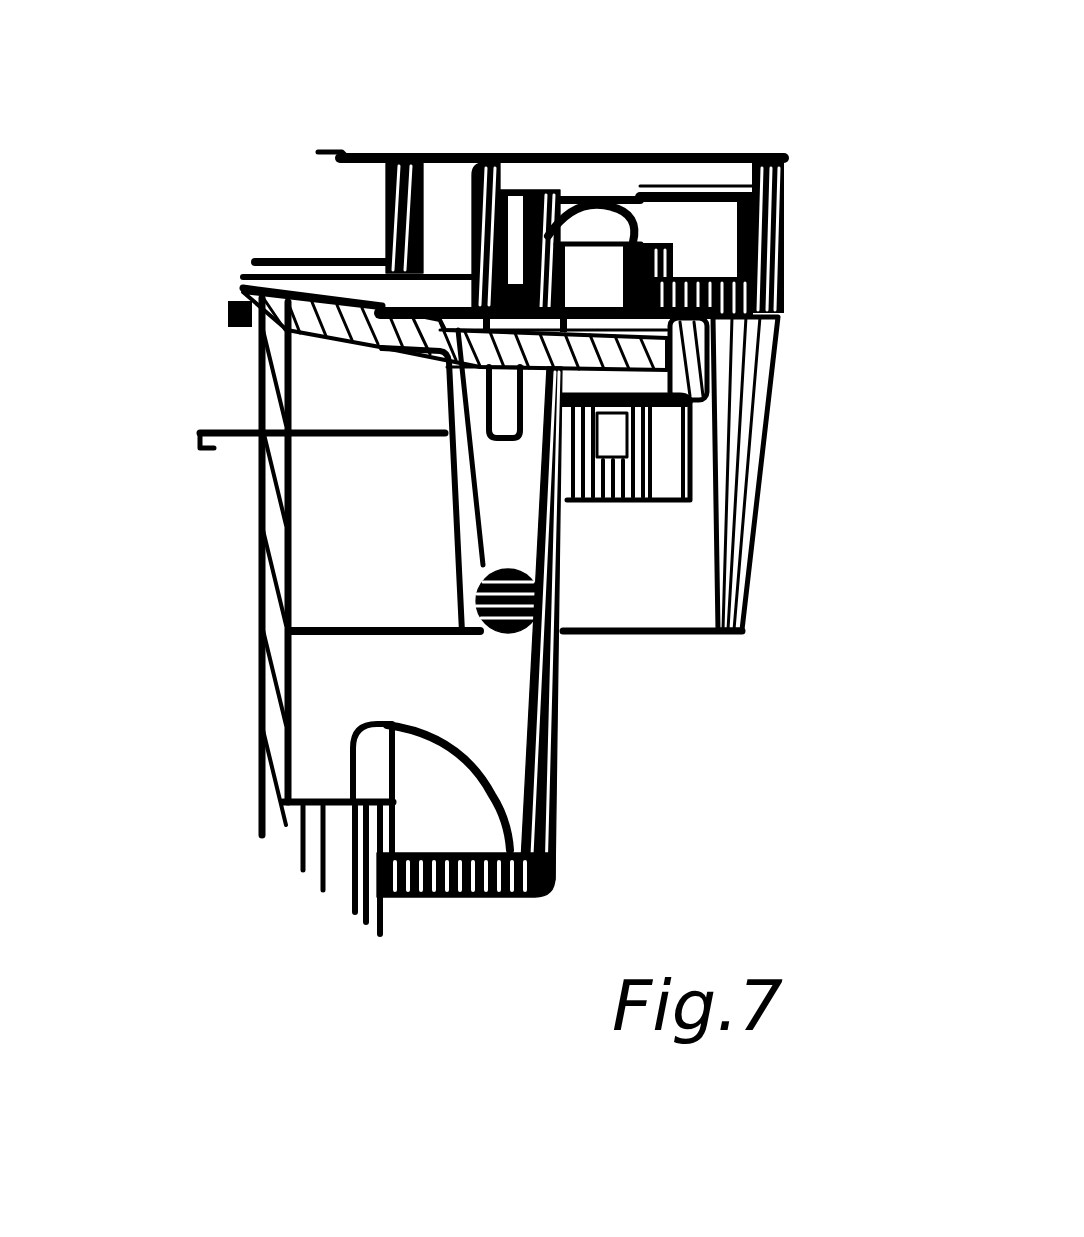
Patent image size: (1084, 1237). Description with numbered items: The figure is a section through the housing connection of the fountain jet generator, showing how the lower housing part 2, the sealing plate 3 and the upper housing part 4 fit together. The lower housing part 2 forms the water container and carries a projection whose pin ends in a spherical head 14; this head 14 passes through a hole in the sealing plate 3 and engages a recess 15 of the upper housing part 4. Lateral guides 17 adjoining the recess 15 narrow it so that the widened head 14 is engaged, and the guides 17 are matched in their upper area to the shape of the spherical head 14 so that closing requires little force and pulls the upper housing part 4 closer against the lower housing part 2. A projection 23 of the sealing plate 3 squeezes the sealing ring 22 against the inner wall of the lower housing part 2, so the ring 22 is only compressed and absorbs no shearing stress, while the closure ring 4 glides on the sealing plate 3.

The lower housing part 2 is at (553, 827).
The sealing plate 3 is at (247, 307).
The upper housing part 4 is at (745, 425).
The spherical head 14 is at (537, 152).
The recess 15 is at (785, 276).
The lateral guide 17 is at (596, 214).
The sealing ring 22 is at (557, 637).
The projection of the sealing plate 23 is at (472, 518).